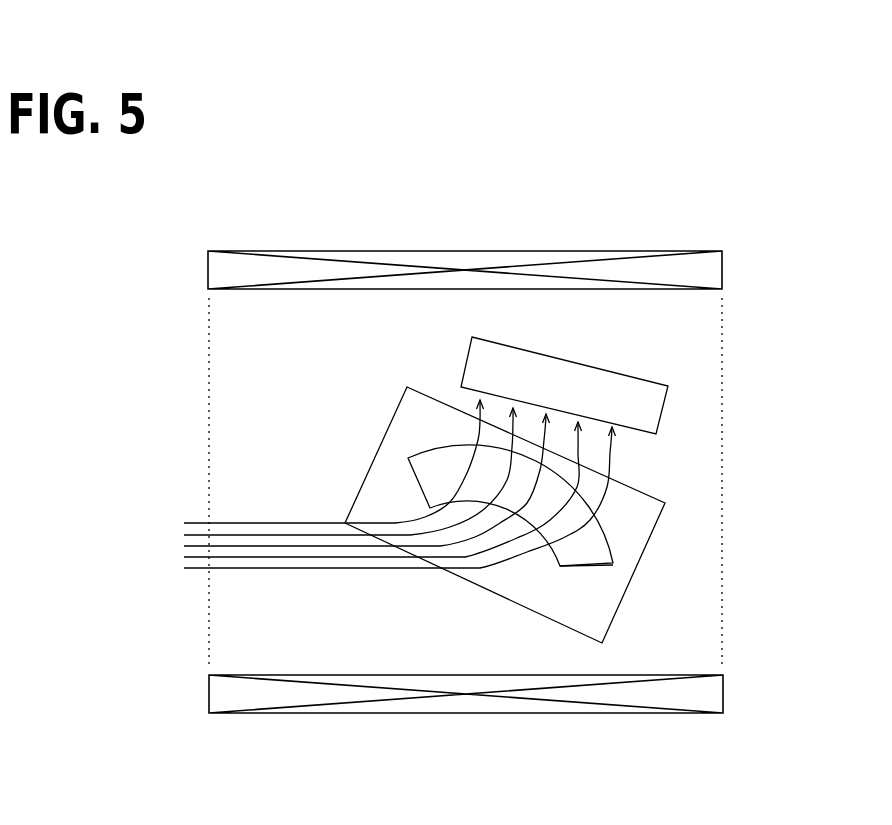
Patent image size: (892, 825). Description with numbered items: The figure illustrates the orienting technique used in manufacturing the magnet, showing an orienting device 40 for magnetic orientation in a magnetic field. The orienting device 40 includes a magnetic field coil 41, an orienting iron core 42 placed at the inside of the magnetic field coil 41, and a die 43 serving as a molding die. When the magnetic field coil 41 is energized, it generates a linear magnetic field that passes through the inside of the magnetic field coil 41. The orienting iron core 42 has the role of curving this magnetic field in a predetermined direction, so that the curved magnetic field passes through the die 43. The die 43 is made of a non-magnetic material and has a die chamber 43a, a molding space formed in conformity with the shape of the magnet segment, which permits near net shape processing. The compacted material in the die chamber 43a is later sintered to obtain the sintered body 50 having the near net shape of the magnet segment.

The orienting device 40 is at (465, 444).
The magnetic field coil 41 is at (688, 250).
The orienting iron core 42 is at (578, 362).
The die 43 is at (393, 416).
The die chamber 43a is at (612, 557).
The sintered body 50 is at (580, 567).